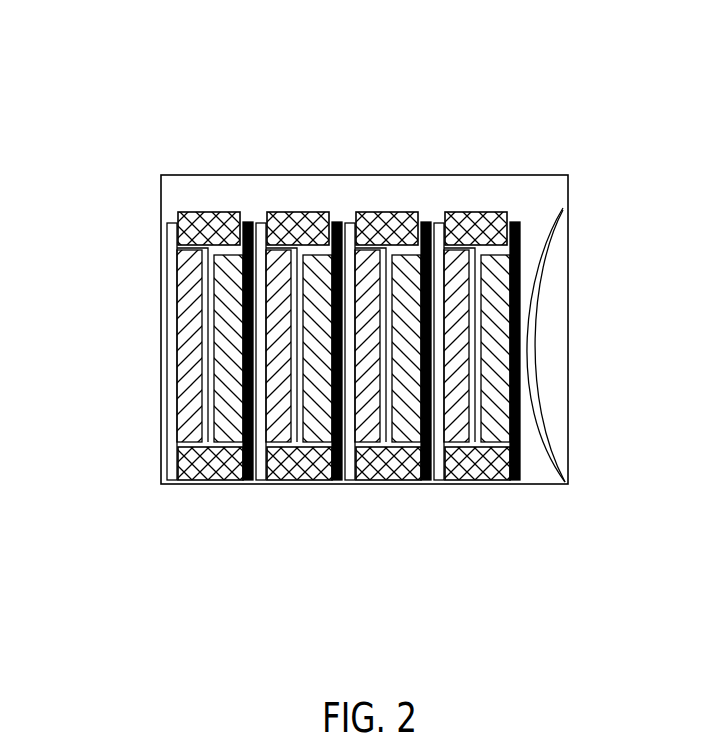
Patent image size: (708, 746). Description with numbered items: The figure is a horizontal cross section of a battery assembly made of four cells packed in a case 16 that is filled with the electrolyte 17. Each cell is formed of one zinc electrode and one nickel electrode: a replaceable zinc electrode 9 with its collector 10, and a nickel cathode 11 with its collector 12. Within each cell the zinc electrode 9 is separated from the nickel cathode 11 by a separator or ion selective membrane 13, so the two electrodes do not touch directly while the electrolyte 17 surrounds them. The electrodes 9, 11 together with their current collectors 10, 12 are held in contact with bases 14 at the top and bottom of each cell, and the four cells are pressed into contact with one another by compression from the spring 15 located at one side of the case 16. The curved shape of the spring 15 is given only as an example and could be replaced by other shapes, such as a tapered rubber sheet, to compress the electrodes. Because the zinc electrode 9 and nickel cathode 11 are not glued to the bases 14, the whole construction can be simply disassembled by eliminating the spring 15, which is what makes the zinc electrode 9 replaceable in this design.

The zinc electrode 9 is at (192, 367).
The collector 10 is at (168, 309).
The nickel cathode 11 is at (227, 308).
The collector 12 is at (246, 225).
The separator or ion selective membrane 13 is at (208, 272).
The bases 14 is at (213, 460).
The spring 15 is at (538, 258).
The case 16 is at (414, 172).
The electrolyte 17 is at (527, 233).